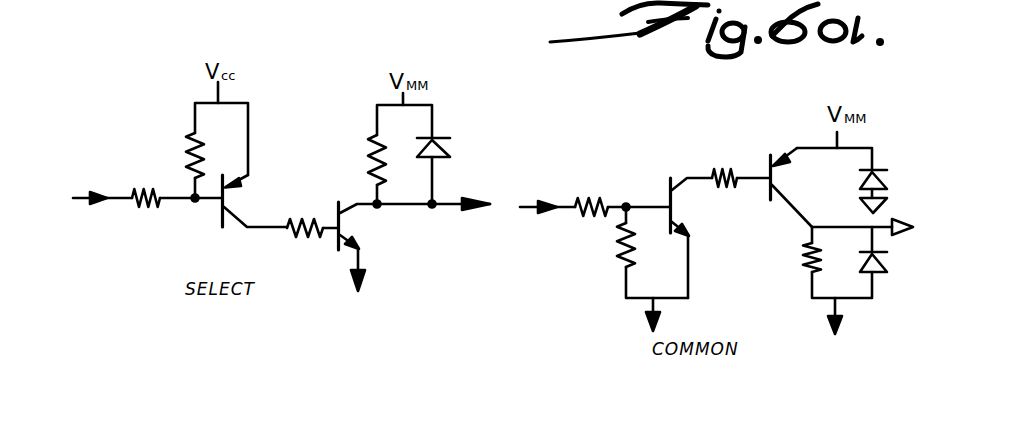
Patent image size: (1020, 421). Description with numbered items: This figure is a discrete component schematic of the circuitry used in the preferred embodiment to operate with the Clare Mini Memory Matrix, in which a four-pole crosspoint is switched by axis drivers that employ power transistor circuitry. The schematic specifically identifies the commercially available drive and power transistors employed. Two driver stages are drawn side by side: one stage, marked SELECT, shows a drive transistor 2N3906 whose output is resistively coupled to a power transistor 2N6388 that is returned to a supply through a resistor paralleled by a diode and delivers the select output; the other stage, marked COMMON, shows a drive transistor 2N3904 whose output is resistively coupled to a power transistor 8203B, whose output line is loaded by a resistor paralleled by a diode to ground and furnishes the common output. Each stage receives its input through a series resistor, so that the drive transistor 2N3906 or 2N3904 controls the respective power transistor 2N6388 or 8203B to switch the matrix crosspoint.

The PNP transistor 2N3906 is at (187, 215).
The NPN transistor 2N6388 is at (389, 246).
The NPN transistor 2N3904 is at (617, 233).
The RCA 8203B PNP transistor 8203B is at (738, 175).